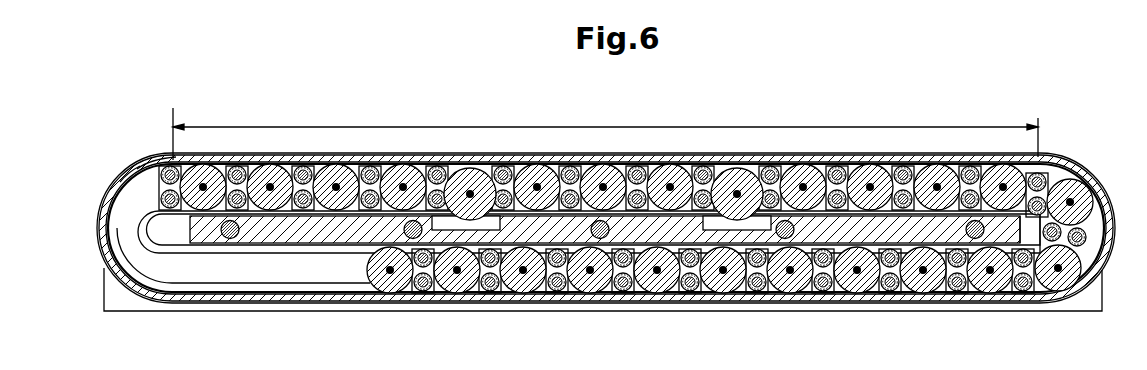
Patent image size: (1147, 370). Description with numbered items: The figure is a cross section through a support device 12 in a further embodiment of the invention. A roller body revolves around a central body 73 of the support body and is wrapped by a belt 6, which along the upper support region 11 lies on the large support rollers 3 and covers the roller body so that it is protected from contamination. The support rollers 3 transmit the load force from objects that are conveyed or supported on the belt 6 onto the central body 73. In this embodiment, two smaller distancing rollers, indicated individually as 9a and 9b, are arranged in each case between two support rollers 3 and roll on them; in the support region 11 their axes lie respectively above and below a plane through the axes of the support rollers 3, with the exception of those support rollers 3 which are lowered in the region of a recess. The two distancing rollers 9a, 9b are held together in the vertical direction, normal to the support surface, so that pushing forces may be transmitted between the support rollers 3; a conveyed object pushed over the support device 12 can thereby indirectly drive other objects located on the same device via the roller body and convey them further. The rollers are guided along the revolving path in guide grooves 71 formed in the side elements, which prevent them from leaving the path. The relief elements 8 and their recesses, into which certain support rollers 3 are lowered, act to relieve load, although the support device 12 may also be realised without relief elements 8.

The support rollers 3 is at (268, 178).
The belt 6 is at (1078, 168).
The relief elements 8 is at (445, 175).
The distancing roller 9a is at (158, 160).
The distancing roller 9b is at (133, 170).
The support region 11 is at (605, 127).
The support device 12 is at (903, 104).
The guide grooves 71 is at (337, 275).
The central body 73 is at (290, 240).